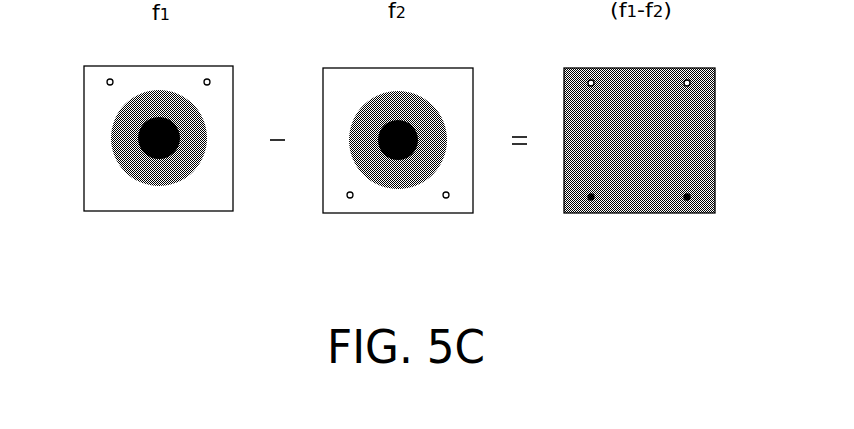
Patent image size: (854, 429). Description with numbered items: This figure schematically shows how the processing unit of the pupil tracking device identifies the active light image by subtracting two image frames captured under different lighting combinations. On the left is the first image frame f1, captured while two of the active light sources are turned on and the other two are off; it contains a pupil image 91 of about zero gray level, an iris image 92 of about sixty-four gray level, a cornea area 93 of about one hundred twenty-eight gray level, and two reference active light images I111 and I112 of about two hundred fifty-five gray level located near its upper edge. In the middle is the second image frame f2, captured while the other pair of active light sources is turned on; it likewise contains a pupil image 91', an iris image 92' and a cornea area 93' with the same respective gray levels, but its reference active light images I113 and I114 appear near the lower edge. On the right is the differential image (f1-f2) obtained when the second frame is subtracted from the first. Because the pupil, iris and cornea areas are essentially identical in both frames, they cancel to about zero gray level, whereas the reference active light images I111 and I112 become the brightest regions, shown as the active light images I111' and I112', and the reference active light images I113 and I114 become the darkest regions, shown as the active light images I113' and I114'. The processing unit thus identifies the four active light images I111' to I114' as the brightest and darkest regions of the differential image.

The pupil image 91 is at (96, 176).
The iris image 92 is at (110, 138).
The cornea area 93 is at (133, 127).
The pupil image 91' is at (455, 172).
The iris image 92' is at (445, 131).
The cornea area 93' is at (421, 118).
The reference active light image I111 is at (218, 42).
The reference active light image I112 is at (101, 42).
The reference active light image I113 is at (447, 230).
The reference active light image I114 is at (341, 230).
The active light image I111' is at (696, 51).
The active light image I112' is at (584, 51).
The active light image I113' is at (690, 231).
The active light image I114' is at (590, 231).